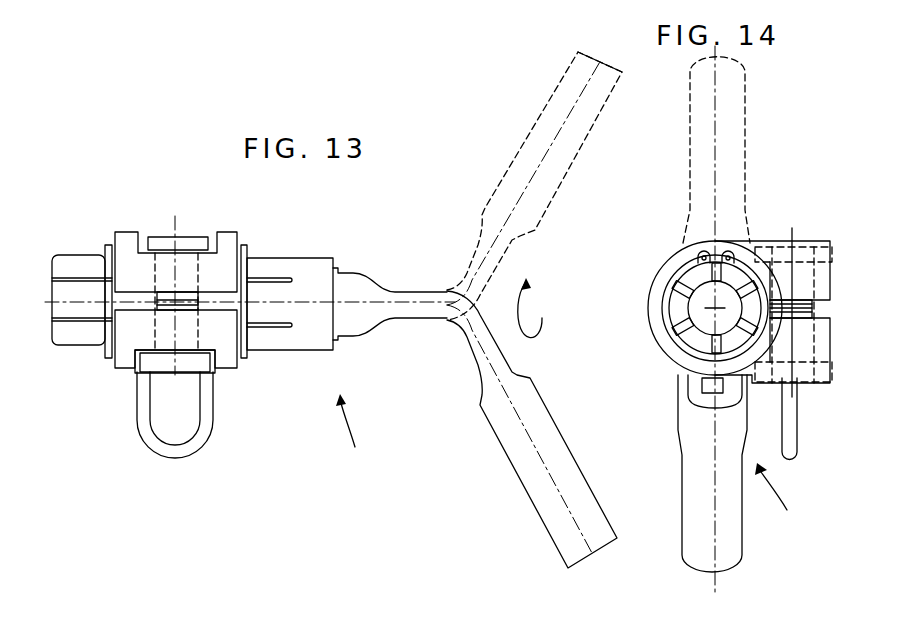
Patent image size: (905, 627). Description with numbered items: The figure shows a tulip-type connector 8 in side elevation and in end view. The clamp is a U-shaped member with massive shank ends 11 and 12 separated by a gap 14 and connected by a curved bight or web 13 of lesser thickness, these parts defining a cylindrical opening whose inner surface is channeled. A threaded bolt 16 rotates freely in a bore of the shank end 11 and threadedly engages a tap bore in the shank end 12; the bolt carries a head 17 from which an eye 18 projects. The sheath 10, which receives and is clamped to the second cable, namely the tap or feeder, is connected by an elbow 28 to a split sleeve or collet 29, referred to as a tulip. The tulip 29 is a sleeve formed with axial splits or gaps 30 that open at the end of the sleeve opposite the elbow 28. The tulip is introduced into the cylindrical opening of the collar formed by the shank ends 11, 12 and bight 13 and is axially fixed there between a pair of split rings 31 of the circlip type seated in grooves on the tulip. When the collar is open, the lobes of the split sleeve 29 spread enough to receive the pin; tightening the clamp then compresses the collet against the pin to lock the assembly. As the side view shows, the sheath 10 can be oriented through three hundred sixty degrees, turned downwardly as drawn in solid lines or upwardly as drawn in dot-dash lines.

In FIG. 13, the assembly 8 is at (352, 435).
In FIG. 14, the assembly 8 is at (779, 498).
In FIG. 13, the sheath 10 is at (530, 142).
In FIG. 14, the sheath 10 is at (745, 93).
In FIG. 13, the shank end 11 is at (226, 355).
In FIG. 14, the shank end 11 is at (823, 380).
In FIG. 13, the shank end 12 is at (127, 243).
In FIG. 14, the shank end 12 is at (805, 238).
In FIG. 14, the bight 13 is at (653, 299).
In FIG. 13, the gap 14 is at (136, 320).
In FIG. 14, the gap 14 is at (822, 312).
In FIG. 13, the threaded bolt 16 is at (205, 270).
In FIG. 14, the threaded bolt 16 is at (818, 258).
In FIG. 13, the head 17 is at (160, 366).
In FIG. 14, the head 17 is at (772, 380).
In FIG. 13, the eye 18 is at (192, 452).
In FIG. 14, the eye 18 is at (793, 445).
In FIG. 13, the elbow 28 is at (409, 295).
In FIG. 13, the split sleeve 29 is at (306, 350).
In FIG. 14, the split sleeve 29 is at (690, 268).
In FIG. 13, the axial splits 30 is at (86, 272).
In FIG. 14, the axial splits 30 is at (684, 325).
In FIG. 13, the split rings 31 is at (248, 256).
In FIG. 14, the split rings 31 is at (683, 352).